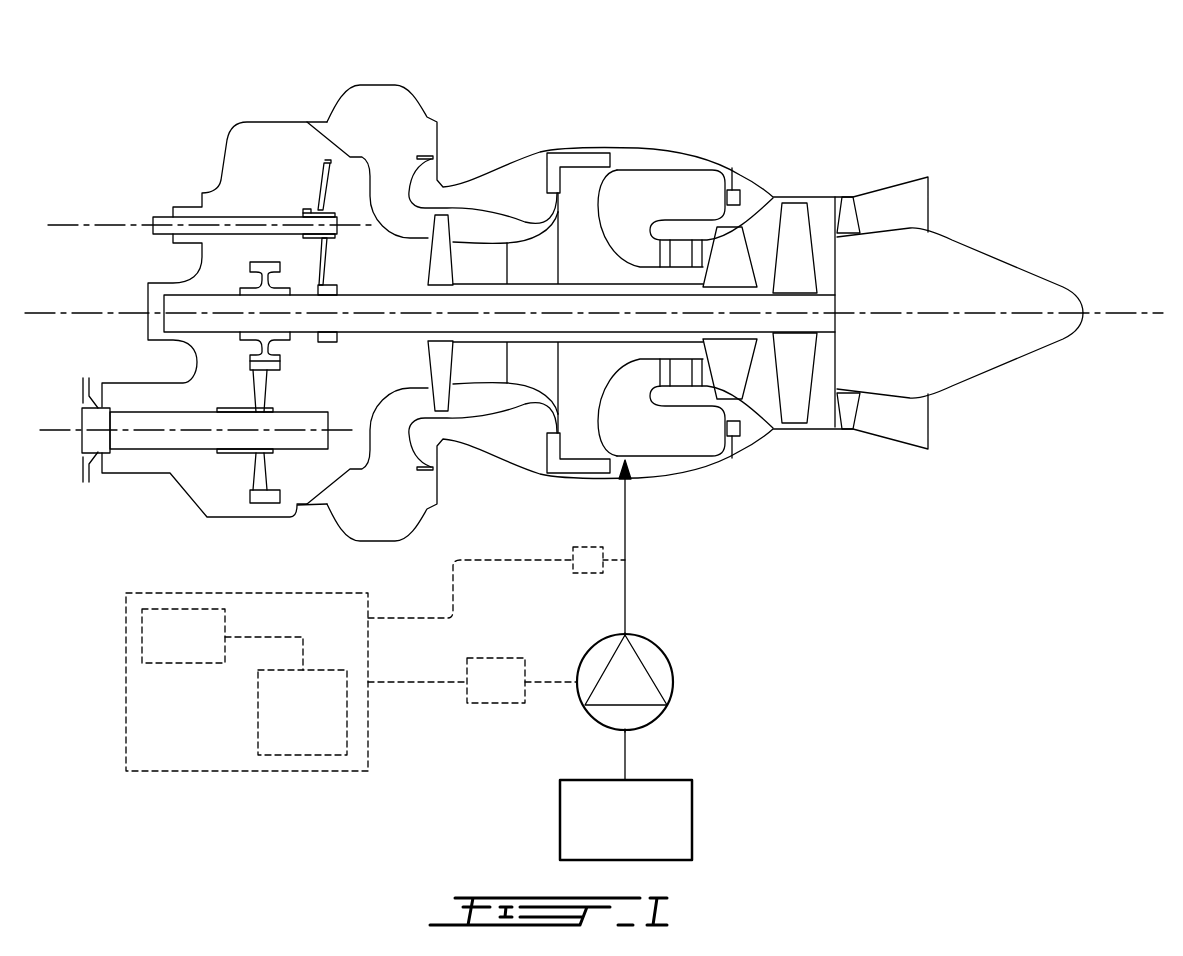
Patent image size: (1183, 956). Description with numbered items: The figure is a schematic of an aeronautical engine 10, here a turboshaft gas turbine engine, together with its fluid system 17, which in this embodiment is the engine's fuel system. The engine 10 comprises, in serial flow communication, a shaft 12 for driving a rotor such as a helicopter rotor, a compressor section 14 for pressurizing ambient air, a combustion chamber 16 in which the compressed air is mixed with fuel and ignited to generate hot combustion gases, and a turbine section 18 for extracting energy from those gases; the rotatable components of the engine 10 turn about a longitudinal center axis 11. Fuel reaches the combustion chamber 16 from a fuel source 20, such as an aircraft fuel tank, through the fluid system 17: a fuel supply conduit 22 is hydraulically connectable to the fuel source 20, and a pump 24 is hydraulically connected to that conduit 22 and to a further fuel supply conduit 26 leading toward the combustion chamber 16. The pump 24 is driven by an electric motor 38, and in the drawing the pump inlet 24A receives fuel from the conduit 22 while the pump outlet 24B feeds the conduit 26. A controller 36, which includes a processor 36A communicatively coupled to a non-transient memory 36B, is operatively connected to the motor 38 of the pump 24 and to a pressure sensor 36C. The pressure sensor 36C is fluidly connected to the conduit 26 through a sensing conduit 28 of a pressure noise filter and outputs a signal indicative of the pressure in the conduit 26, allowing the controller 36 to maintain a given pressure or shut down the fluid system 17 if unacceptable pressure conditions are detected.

The aeronautical engine 10 is at (594, 279).
The longitudinal center axis 11 is at (1135, 312).
The shaft 12 is at (139, 440).
The compressor section 14 is at (530, 255).
The combustion chamber 16 is at (667, 197).
The fluid system 17 is at (553, 660).
The turbine section 18 is at (762, 370).
The fuel source 20 is at (615, 833).
The fuel supply conduit 22 is at (627, 757).
The pump 24 is at (655, 640).
The pump inlet 24A is at (623, 732).
The pump outlet 24B is at (623, 633).
The fuel supply conduit 26 is at (627, 510).
The sensing conduit 28 is at (613, 553).
The controller 36 is at (349, 649).
The processor 36A is at (160, 650).
The non-transient memory 36B is at (283, 725).
The pressure sensor 36C is at (573, 550).
The electric motor 38 is at (510, 693).